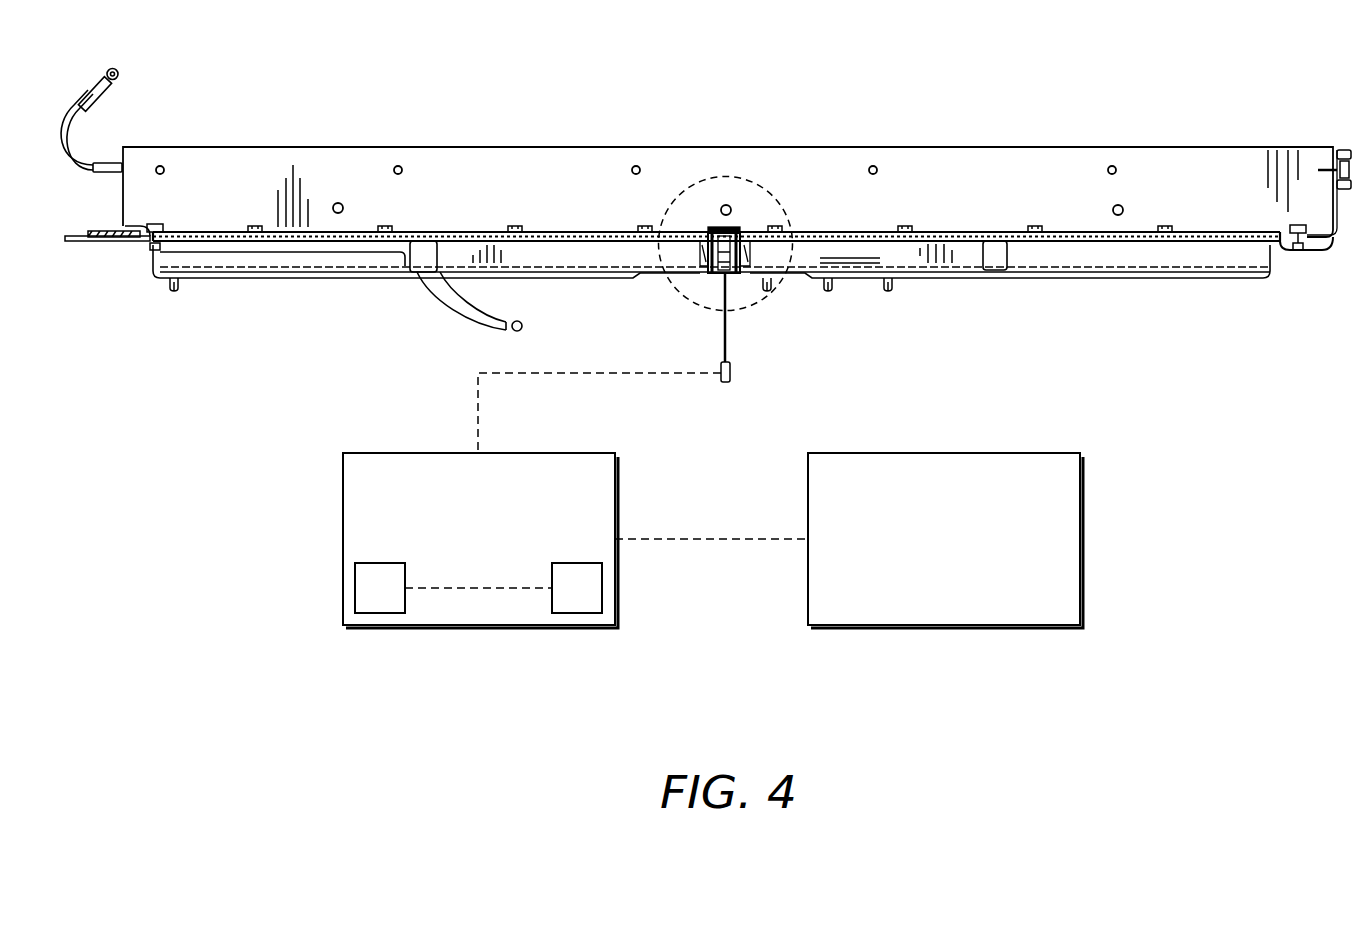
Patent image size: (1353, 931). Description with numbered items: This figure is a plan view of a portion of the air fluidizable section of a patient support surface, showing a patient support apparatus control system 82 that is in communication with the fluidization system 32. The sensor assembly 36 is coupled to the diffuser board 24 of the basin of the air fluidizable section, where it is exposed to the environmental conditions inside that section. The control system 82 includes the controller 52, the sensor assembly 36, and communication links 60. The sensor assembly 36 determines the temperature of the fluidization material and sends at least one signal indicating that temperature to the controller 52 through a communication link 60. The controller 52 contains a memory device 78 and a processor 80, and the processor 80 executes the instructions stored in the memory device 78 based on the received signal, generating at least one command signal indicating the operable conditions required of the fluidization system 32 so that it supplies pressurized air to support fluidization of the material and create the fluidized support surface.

The diffuser board 24 is at (805, 235).
The sensor assembly 36 is at (715, 233).
The communication links 60 is at (609, 363).
The controller 52 is at (494, 535).
The memory device 78 is at (395, 600).
The processor 80 is at (592, 600).
The fluidization system 32 is at (962, 592).
The patient support apparatus control system 82 is at (246, 431).